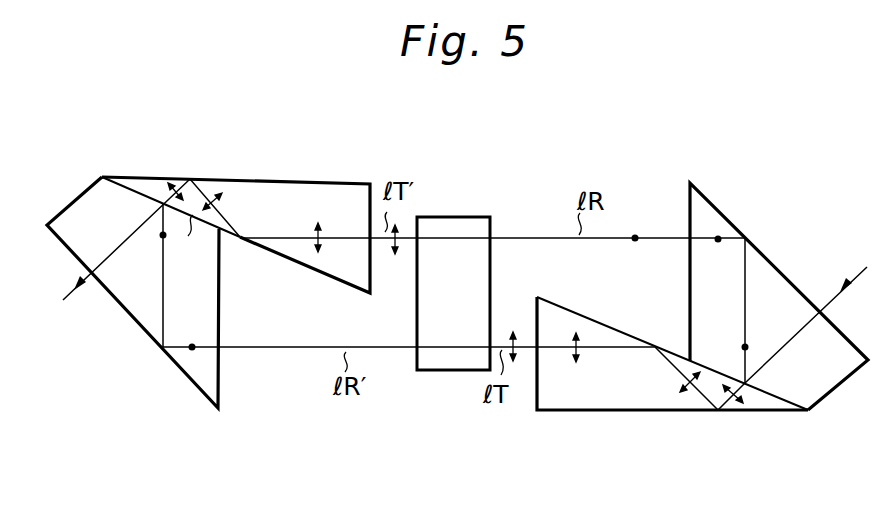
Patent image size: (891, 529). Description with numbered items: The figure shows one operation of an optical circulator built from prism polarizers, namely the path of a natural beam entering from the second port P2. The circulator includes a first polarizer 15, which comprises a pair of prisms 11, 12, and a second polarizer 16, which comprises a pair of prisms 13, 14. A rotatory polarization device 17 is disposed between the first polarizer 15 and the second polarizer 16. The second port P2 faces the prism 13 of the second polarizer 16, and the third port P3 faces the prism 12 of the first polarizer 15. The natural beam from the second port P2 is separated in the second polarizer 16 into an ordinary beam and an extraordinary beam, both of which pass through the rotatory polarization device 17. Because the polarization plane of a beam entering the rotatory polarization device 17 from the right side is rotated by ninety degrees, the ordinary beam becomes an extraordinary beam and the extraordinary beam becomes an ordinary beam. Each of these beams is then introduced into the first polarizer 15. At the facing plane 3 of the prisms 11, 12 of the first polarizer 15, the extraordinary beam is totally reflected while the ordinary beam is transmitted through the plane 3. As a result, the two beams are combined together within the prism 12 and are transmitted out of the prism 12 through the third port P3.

The facing plane 3 is at (765, 393).
The prism 11 is at (261, 188).
The prism 12 is at (65, 243).
The prism 13 is at (773, 275).
The prism 14 is at (675, 382).
The first polarizer 15 is at (193, 251).
The second polarizer 16 is at (702, 337).
The rotatory polarization device 17 is at (477, 216).
The second port P2 is at (800, 327).
The third port P3 is at (136, 257).